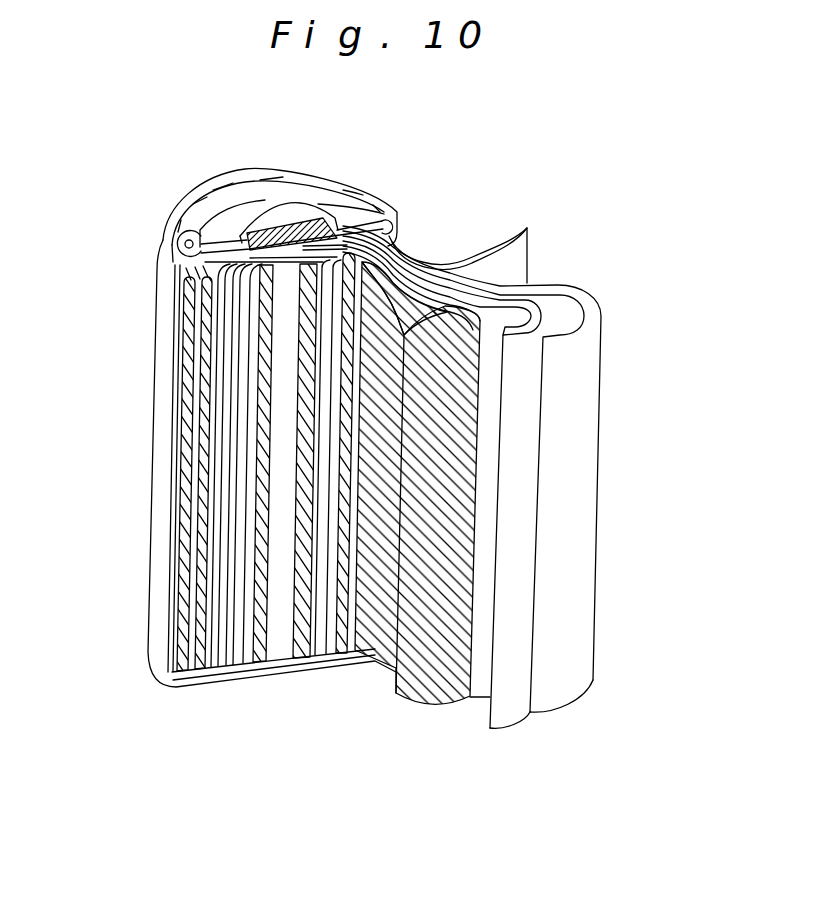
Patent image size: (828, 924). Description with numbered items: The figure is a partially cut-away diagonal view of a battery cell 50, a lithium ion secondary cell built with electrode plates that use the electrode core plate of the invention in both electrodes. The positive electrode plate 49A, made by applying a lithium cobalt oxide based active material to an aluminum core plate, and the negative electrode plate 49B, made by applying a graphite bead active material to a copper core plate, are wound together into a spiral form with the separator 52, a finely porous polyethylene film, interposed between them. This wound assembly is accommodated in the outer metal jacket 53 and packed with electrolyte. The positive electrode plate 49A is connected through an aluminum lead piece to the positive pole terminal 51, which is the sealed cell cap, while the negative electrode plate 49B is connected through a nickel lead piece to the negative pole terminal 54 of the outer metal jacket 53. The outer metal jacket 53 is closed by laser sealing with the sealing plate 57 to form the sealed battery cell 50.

The positive electrode plate 49A is at (570, 455).
The negative electrode plate 49B is at (437, 667).
The battery cell 50 is at (434, 238).
The positive pole terminal 51 is at (289, 212).
The separator 52 is at (518, 518).
The outer metal jacket 53 is at (152, 420).
The negative pole terminal 54 is at (288, 660).
The sealing plate 57 is at (260, 257).